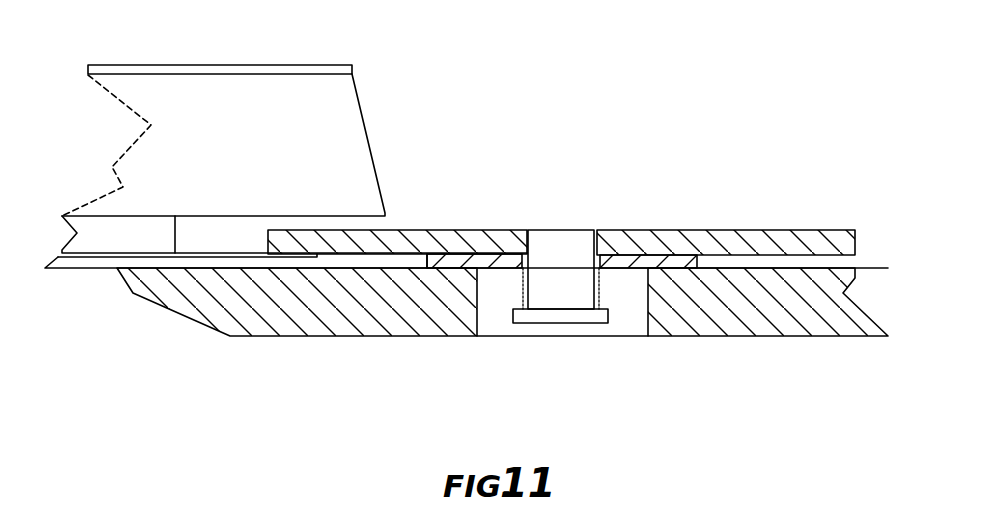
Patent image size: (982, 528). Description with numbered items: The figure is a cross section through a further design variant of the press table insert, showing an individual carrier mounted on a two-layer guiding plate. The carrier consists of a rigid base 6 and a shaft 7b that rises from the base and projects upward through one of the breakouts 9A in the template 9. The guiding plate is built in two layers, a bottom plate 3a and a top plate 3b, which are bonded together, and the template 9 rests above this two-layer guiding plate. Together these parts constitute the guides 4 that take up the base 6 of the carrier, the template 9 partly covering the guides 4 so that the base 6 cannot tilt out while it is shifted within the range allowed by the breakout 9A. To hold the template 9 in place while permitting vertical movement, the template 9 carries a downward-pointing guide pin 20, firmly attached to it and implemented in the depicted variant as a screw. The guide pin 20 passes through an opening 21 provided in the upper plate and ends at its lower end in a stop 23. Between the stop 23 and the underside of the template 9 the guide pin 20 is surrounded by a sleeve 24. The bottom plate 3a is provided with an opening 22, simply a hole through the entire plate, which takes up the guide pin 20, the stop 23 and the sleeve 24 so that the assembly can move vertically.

The shaft 7b is at (327, 125).
The base 6 is at (207, 262).
The breakouts 9A is at (258, 232).
The guides 4 is at (391, 262).
The opening 21 is at (612, 255).
The template 9 is at (760, 247).
The guide pin 20 is at (557, 230).
The sleeve 24 is at (600, 288).
The stop 23 is at (560, 318).
The bottom plate 3a is at (415, 318).
The opening 22 is at (500, 317).
The top plate 3b is at (662, 266).